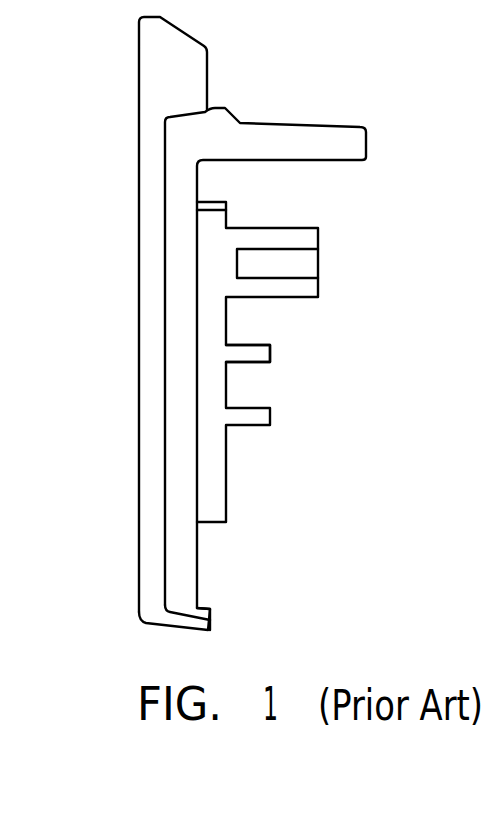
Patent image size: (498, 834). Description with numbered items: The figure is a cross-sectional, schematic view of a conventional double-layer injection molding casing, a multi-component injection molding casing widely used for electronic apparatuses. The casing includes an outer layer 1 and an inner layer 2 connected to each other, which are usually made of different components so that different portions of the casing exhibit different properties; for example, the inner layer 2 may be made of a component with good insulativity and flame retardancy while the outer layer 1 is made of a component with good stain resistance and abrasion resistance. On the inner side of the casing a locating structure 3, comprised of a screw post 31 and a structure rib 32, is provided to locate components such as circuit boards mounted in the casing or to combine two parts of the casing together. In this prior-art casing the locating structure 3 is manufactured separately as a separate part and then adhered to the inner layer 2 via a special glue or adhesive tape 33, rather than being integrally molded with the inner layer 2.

The outer layer 1 is at (146, 330).
The inner layer 2 is at (183, 507).
The locating structure 3 is at (217, 453).
The screw post 31 is at (300, 260).
The structure rib 32 is at (260, 352).
The glue or adhesive tape 33 is at (226, 210).